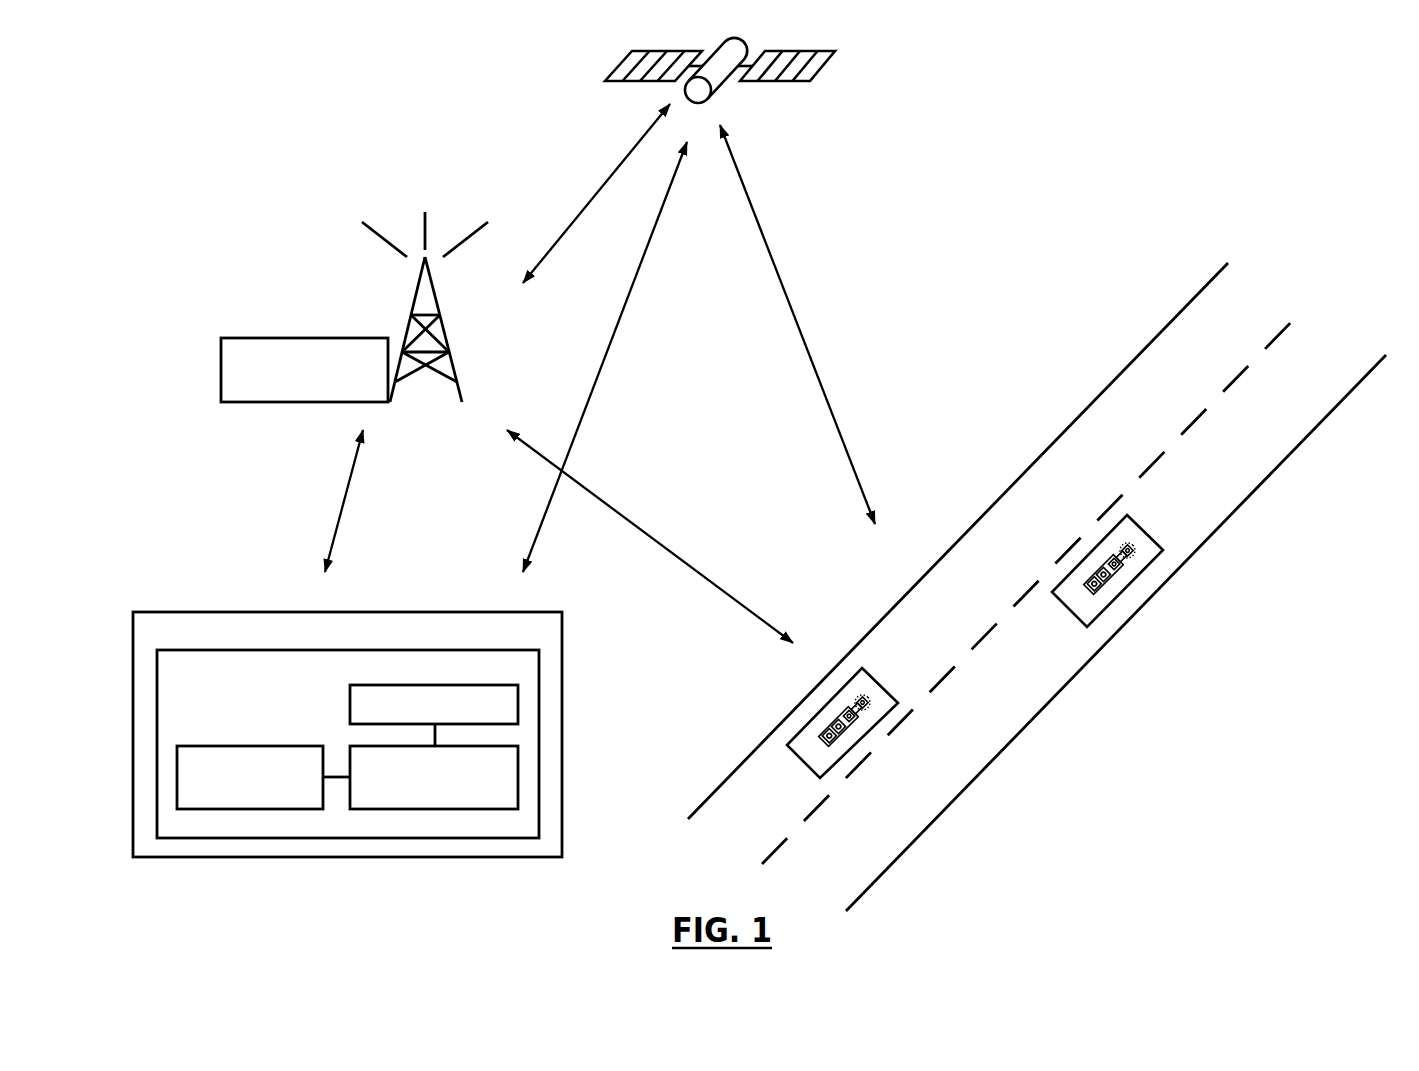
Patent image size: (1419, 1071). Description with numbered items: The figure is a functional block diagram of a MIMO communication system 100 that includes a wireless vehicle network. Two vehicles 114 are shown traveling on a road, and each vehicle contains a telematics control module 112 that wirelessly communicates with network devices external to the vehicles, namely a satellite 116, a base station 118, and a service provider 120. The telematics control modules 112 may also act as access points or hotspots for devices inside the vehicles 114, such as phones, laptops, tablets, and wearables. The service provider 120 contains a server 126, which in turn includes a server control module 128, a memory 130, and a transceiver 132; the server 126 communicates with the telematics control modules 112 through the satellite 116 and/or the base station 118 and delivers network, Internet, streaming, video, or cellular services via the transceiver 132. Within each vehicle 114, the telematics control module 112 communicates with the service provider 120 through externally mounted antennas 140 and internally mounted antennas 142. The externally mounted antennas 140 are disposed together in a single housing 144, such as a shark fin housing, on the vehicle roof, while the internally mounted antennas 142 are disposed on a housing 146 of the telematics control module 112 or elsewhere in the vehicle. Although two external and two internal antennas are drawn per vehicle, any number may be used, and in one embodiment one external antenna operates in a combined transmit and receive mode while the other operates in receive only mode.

The MIMO communication system 100 is at (288, 101).
The telematics control module 112 is at (832, 730).
The vehicle 114 is at (868, 668).
The satellite 116 is at (838, 52).
The base station 118 is at (302, 337).
The service provider 120 is at (200, 612).
The server 126 is at (210, 650).
The server control module 128 is at (520, 768).
The memory 130 is at (250, 745).
The transceiver 132 is at (520, 698).
The externally mounted antenna 140 is at (847, 713).
The internally mounted antenna 142 is at (835, 728).
The housing 144 is at (872, 702).
The housing of telematics control module 146 is at (837, 738).